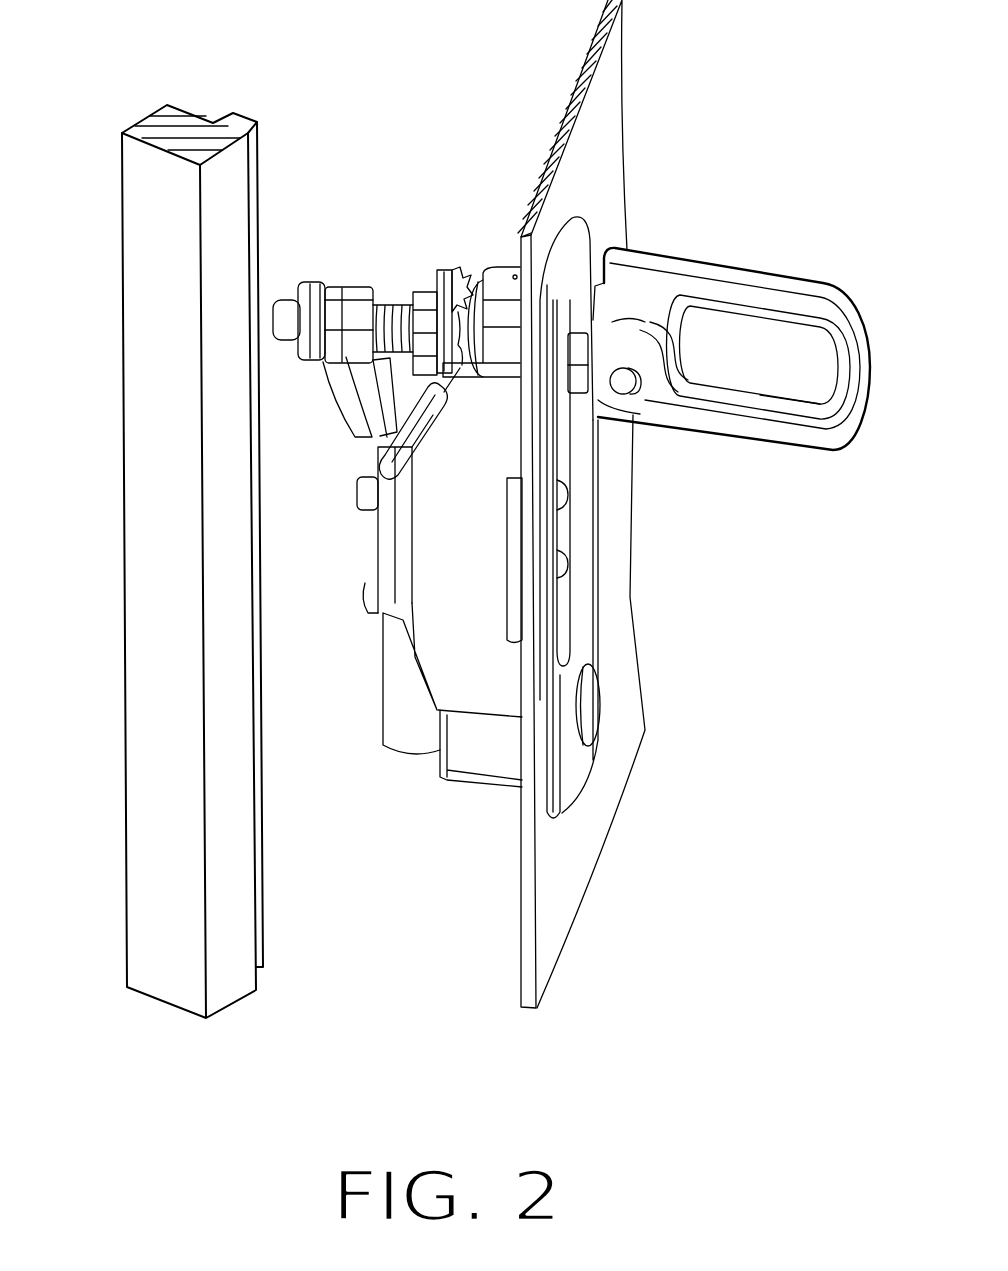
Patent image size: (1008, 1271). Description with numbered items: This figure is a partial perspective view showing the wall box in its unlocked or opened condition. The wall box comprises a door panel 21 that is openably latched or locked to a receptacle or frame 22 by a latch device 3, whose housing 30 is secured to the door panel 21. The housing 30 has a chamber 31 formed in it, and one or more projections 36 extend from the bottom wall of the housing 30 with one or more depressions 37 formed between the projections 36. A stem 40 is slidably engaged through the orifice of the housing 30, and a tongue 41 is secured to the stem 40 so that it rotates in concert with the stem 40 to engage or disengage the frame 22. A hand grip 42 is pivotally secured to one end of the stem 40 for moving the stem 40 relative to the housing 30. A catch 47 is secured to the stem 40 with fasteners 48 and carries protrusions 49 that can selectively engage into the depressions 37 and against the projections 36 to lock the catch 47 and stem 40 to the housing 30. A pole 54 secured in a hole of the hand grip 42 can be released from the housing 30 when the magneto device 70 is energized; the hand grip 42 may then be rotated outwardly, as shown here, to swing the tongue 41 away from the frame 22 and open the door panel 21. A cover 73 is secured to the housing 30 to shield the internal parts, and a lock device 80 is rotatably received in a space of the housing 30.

The latch device 3 is at (600, 779).
The door panel 21 is at (555, 900).
The frame 22 is at (127, 313).
The housing 30 is at (492, 758).
The chamber 31 is at (582, 550).
The projections 36 is at (473, 272).
The depressions 37 is at (482, 270).
The stem 40 is at (270, 332).
The tongue 41 is at (330, 385).
The hand grip 42 is at (782, 273).
The catch 47 is at (447, 270).
The fasteners 48 is at (413, 295).
The protrusions 49 is at (440, 268).
The pole 54 is at (650, 420).
The magneto device 70 is at (393, 740).
The cover 73 is at (375, 558).
The lock device 80 is at (598, 716).